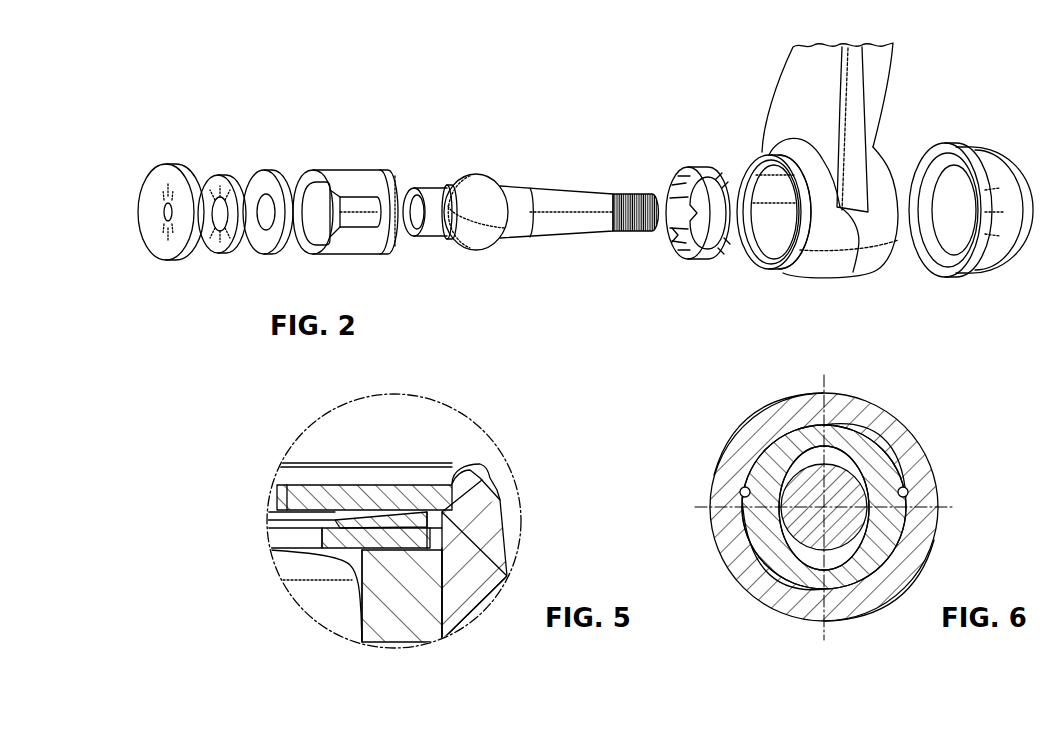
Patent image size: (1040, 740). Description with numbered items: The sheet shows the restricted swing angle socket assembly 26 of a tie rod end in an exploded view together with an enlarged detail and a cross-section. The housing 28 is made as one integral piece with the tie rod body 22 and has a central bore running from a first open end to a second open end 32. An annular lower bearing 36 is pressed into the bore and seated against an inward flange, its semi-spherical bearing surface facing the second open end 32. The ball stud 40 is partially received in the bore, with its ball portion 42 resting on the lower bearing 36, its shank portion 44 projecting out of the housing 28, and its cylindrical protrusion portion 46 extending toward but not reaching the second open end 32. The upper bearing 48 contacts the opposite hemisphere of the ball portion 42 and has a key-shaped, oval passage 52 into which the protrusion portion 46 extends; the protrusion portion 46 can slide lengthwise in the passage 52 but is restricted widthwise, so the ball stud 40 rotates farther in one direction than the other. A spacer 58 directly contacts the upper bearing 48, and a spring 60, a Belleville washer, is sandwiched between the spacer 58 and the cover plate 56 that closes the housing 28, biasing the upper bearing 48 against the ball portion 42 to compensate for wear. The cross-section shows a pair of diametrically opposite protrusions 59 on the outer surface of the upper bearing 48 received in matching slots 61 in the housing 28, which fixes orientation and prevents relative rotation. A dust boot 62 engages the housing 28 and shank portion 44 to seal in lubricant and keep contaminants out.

In FIG. 2, the tie rod body 22 is at (786, 78).
In FIG. 2, the socket assembly 26 is at (214, 280).
In FIG. 2, the housing 28 is at (830, 263).
In FIG. 6, the housing 28 is at (893, 428).
In FIG. 2, the second open end 32 is at (757, 256).
In FIG. 2, the lower bearing 36 is at (704, 166).
In FIG. 2, the ball stud 40 is at (434, 258).
In FIG. 2, the ball portion 42 is at (480, 246).
In FIG. 2, the shank portion 44 is at (551, 197).
In FIG. 2, the protrusion portion 46 is at (441, 195).
In FIG. 6, the protrusion portion 46 is at (845, 525).
In FIG. 2, the upper bearing 48 is at (360, 257).
In FIG. 6, the upper bearing 48 is at (880, 478).
In FIG. 2, the passage 52 is at (312, 228).
In FIG. 6, the passage 52 is at (818, 455).
In FIG. 2, the cover plate 56 is at (172, 177).
In FIG. 2, the spacer 58 is at (266, 180).
In FIG. 2, the protrusions 59 is at (358, 200).
In FIG. 6, the protrusions 59 is at (722, 530).
In FIG. 2, the spring 60 is at (222, 177).
In FIG. 6, the slots 61 is at (748, 490).
In FIG. 2, the dust boot 62 is at (984, 160).